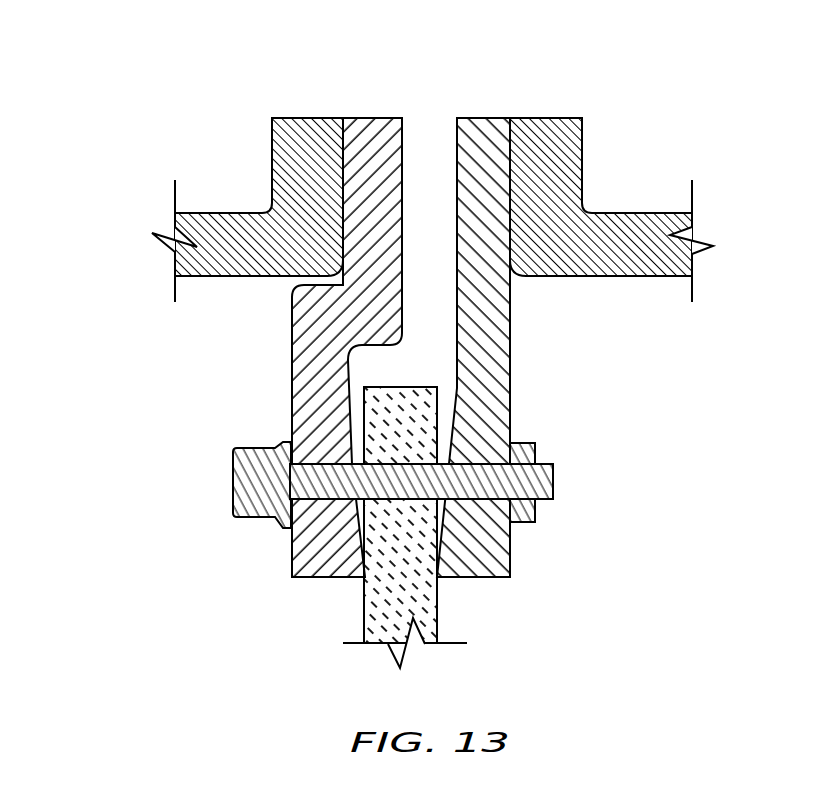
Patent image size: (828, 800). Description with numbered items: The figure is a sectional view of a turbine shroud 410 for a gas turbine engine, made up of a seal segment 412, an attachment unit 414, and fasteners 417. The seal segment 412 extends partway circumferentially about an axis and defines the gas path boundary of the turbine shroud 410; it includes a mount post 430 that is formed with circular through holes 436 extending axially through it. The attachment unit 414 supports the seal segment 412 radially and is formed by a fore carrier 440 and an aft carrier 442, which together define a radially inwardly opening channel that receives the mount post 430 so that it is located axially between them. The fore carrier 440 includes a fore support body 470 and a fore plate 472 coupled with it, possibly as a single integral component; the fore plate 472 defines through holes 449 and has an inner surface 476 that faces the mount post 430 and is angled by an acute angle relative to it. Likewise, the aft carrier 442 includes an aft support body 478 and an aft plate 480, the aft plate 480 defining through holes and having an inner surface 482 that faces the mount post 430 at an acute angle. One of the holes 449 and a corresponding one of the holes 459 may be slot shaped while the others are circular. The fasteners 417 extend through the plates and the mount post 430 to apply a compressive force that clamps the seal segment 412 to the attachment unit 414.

The turbine shroud 410 is at (172, 123).
The seal segment 412 is at (427, 596).
The attachment unit 414 is at (217, 278).
The fasteners 417 is at (232, 477).
The mount post 430 is at (363, 602).
The through holes 436 is at (413, 476).
The fore carrier 440 is at (250, 210).
The aft carrier 442 is at (622, 185).
The through holes 449 is at (310, 481).
The holes 459 is at (497, 478).
The fore support body 470 is at (208, 247).
The fore plate 472 is at (372, 172).
The inner surface 476 is at (348, 395).
The aft support body 478 is at (598, 277).
The aft plate 480 is at (477, 218).
The inner surface 482 is at (452, 395).